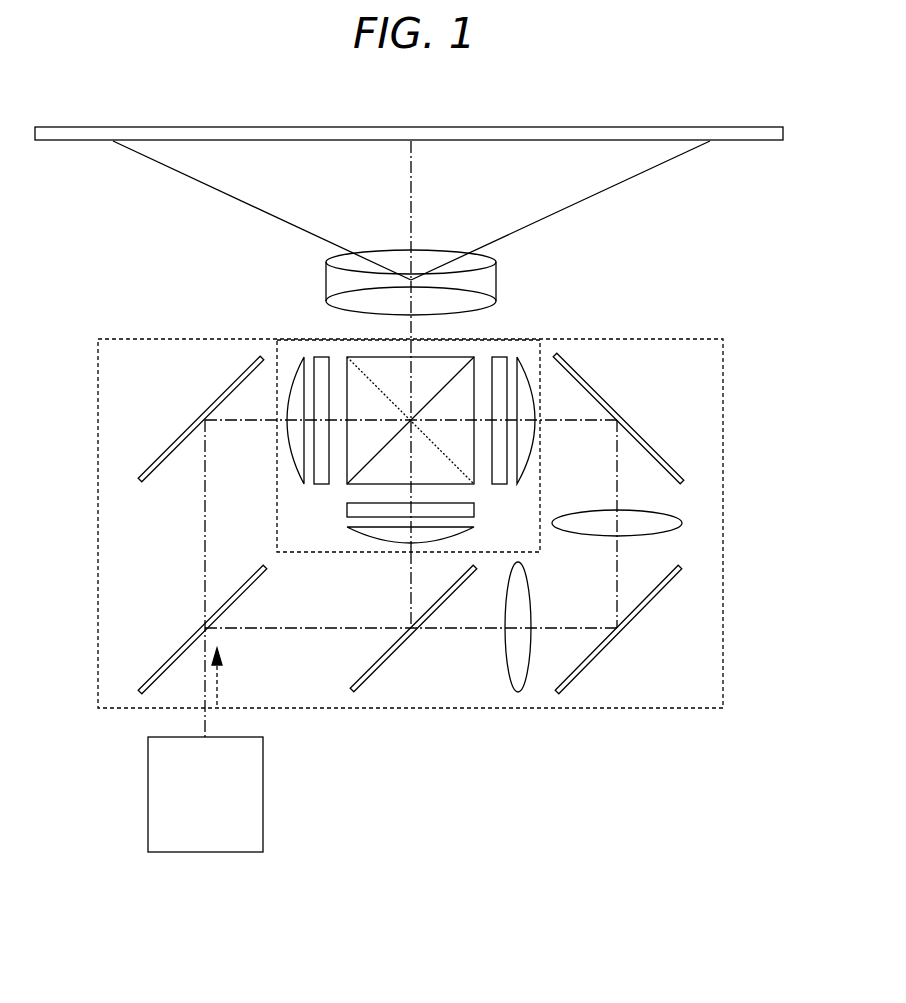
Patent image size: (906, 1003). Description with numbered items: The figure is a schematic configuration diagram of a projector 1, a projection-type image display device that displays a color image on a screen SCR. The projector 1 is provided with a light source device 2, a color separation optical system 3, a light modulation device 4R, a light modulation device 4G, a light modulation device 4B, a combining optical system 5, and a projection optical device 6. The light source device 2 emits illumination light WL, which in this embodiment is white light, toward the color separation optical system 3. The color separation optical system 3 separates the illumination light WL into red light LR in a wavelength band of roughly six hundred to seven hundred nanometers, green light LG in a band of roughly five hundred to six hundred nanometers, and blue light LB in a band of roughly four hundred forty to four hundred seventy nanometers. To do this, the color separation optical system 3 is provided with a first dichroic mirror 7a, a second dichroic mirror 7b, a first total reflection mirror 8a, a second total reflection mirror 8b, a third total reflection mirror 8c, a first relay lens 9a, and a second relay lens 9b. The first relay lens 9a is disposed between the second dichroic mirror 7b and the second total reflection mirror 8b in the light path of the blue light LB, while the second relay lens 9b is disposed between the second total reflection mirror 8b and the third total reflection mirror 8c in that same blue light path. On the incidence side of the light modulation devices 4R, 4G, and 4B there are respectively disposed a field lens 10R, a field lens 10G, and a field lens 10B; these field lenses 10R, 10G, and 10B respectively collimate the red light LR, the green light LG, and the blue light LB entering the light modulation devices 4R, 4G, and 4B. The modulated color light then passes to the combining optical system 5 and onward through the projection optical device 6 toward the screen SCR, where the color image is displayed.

The projector 1 is at (733, 312).
The light source device 2 is at (263, 823).
The color separation optical system 3 is at (98, 472).
The light modulation device 4R is at (322, 357).
The light modulation device 4G is at (347, 508).
The light modulation device 4B is at (500, 357).
The combining optical system 5 is at (432, 360).
The projection optical device 6 is at (393, 262).
The first dichroic mirror 7a is at (172, 655).
The second dichroic mirror 7b is at (395, 655).
The first total reflection mirror 8a is at (180, 433).
The second total reflection mirror 8b is at (645, 612).
The third total reflection mirror 8c is at (645, 435).
The first relay lens 9a is at (505, 645).
The second relay lens 9b is at (682, 521).
The field lens 10R is at (298, 357).
The field lens 10G is at (350, 530).
The field lens 10B is at (522, 357).
The screen SCR is at (750, 141).
The illumination light WL is at (222, 683).
The red light LR is at (205, 545).
The green light LG is at (411, 587).
The blue light LB is at (617, 580).